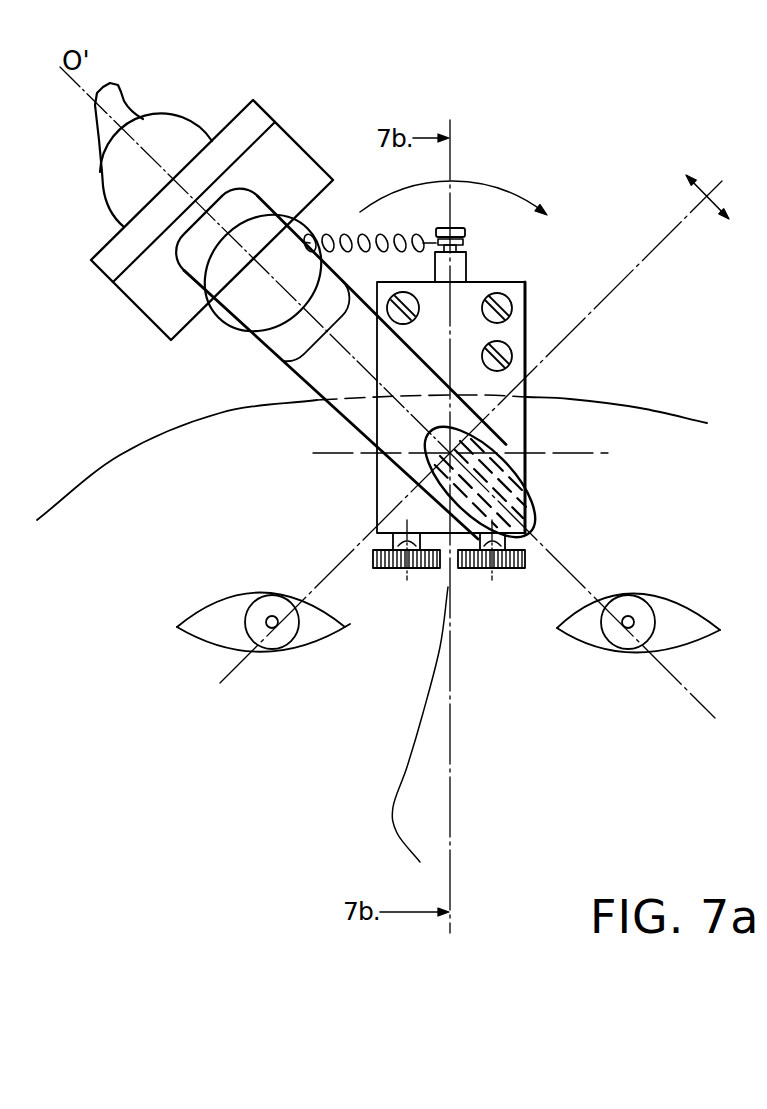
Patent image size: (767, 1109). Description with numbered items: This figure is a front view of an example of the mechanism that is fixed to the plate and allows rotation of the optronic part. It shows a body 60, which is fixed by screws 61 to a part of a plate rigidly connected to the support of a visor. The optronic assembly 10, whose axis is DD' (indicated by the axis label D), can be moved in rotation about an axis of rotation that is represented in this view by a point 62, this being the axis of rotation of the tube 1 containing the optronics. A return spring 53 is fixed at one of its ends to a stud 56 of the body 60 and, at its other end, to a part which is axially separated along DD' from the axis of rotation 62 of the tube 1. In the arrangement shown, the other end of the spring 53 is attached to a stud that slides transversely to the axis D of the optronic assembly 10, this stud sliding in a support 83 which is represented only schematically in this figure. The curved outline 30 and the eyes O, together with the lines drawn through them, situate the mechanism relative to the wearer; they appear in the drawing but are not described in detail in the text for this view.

The tube 1 is at (235, 320).
The optronic assembly 10 is at (313, 376).
The helmet shell 30 is at (123, 477).
The return spring 53 is at (383, 232).
The stud 56 is at (467, 258).
The body 60 is at (527, 422).
The screws 61 is at (512, 353).
The axis of rotation 62 is at (425, 472).
The support 83 is at (115, 267).
The eye of the wearer O is at (223, 628).
The axis DD' D is at (474, 449).